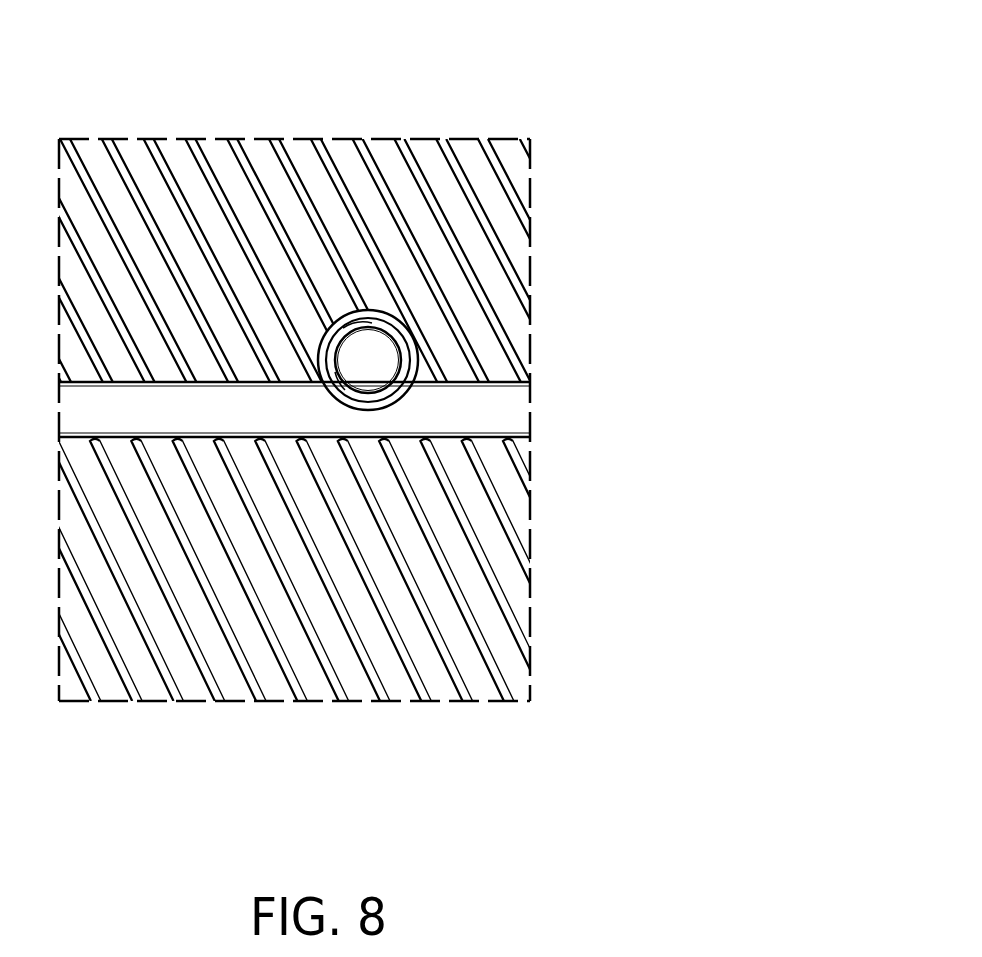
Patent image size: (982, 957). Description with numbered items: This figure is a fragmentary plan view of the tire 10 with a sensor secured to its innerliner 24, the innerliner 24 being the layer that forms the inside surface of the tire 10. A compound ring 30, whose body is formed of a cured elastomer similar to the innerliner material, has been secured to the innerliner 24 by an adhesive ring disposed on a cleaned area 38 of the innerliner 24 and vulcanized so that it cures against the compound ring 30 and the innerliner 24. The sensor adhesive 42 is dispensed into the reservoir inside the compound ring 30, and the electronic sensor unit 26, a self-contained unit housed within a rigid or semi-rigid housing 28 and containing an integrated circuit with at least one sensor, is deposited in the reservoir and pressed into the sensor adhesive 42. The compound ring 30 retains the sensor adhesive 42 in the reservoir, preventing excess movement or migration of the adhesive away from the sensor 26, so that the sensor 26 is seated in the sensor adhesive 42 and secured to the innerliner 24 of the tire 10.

The tire 10 is at (328, 368).
The innerliner 24 is at (505, 544).
The electronic sensor unit 26 is at (418, 347).
The housing 28 is at (380, 363).
The compound ring 30 is at (421, 322).
The area of the tire innerliner 38 is at (440, 360).
The sensor adhesive 42 is at (342, 330).